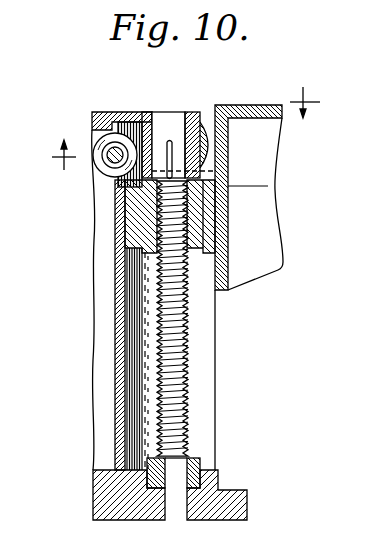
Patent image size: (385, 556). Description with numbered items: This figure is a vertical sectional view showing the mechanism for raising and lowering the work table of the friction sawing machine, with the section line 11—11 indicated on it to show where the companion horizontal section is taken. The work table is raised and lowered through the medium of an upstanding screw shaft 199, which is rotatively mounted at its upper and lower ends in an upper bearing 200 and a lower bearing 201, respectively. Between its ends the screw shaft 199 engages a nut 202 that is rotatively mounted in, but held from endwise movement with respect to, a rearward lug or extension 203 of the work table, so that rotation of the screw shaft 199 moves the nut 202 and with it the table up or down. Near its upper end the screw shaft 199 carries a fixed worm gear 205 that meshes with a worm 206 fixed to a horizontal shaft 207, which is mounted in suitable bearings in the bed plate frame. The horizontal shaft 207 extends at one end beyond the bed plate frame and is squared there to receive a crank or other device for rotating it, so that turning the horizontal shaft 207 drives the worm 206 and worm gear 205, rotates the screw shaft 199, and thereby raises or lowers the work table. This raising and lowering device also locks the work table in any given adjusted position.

The screw shaft 199 is at (190, 363).
The upper bearing 200 is at (197, 112).
The lower bearing 201 is at (200, 468).
The nut 202 is at (144, 228).
The rearward lug or extension of the work table 203 is at (216, 219).
The worm gear 205 is at (147, 149).
The worm 206 is at (98, 148).
The horizontal shaft 207 is at (112, 158).
The section line 11— 11 is at (189, 128).